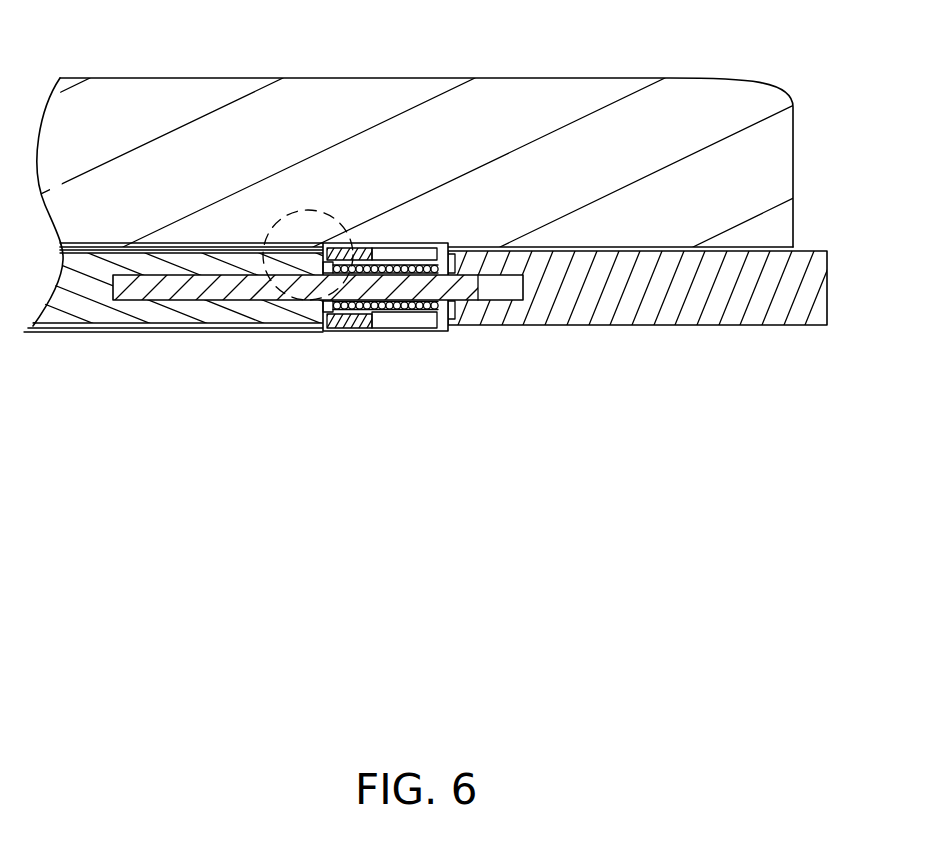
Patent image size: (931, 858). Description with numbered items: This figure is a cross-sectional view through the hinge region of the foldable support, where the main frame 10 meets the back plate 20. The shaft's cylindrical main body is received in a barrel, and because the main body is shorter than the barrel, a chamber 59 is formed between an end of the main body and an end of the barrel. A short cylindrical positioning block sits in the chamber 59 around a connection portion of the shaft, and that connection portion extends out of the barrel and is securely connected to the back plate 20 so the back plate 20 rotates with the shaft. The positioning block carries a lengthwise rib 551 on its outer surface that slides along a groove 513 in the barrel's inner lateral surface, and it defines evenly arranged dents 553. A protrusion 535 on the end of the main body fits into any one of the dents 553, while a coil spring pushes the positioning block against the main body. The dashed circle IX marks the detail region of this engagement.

The main frame 10 is at (608, 157).
The back plate 20 is at (640, 288).
The chamber 59 is at (407, 317).
The groove 513 is at (420, 257).
The protrusion 535 is at (322, 264).
The rib 551 is at (356, 255).
The dent 553 is at (328, 257).
The detail view circle IX is at (313, 290).